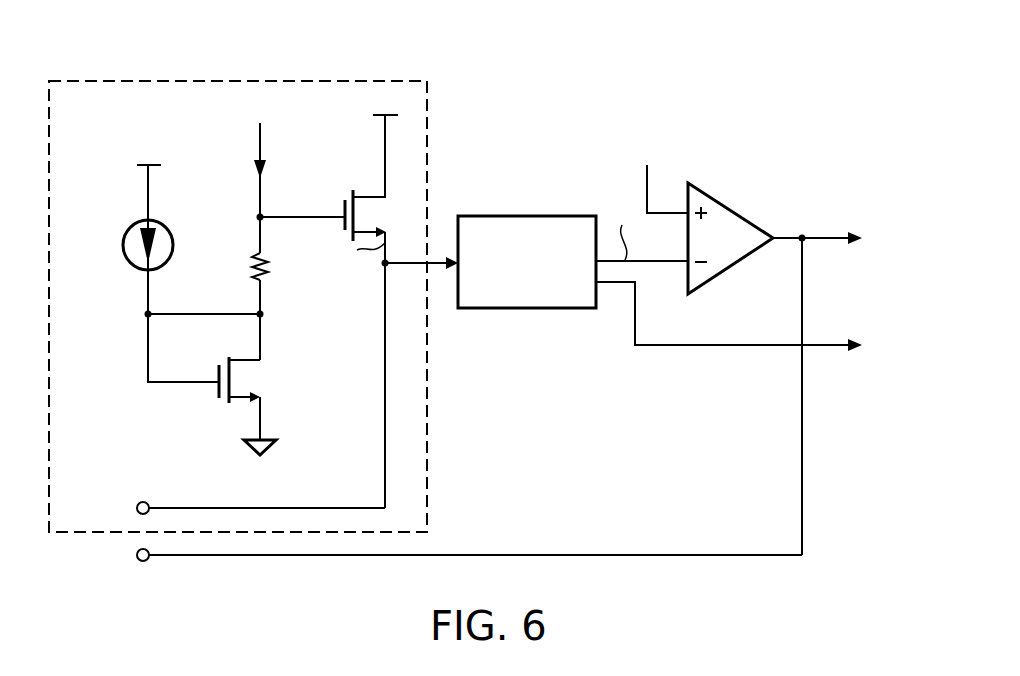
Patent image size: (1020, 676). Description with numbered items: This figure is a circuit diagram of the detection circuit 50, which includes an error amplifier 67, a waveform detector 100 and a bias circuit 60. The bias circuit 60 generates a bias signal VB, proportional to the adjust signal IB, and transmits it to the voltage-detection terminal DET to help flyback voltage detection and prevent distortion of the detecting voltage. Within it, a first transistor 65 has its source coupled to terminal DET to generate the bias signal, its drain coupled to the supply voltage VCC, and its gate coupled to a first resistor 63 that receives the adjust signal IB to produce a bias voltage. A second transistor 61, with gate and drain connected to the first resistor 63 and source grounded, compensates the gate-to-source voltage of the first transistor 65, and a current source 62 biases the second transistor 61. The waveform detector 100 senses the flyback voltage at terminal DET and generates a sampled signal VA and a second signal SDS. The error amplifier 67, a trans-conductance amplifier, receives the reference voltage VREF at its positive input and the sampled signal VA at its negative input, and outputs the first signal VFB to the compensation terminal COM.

The detection circuit 50 is at (896, 89).
The bias circuit 60 is at (220, 80).
The second transistor 61 is at (257, 378).
The current source 62 is at (122, 250).
The first resistor 63 is at (268, 266).
The first transistor 65 is at (358, 217).
The error amplifier 67 is at (730, 208).
The waveform detector 100 is at (547, 312).